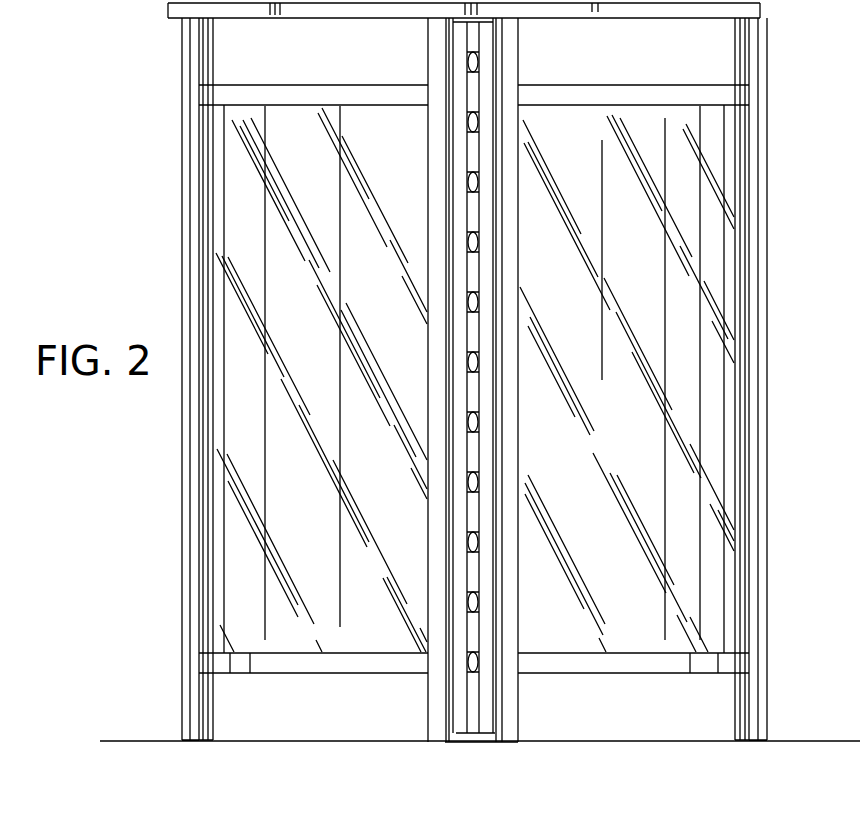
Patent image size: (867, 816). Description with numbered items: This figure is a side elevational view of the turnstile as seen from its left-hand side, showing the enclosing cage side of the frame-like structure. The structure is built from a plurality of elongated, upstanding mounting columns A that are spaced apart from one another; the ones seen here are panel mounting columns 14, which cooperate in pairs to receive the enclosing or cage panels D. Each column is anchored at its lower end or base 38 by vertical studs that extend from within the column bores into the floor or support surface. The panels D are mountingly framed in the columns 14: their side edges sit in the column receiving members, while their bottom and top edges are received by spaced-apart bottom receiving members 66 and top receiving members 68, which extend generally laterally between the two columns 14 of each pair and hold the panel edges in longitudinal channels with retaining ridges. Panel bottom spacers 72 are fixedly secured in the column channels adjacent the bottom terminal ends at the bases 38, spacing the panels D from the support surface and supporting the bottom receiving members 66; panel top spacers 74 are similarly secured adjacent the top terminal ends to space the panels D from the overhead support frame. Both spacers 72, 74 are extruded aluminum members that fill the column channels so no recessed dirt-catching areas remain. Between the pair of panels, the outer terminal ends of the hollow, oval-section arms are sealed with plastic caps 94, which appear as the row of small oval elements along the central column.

The panel mounting column 14 is at (196, 480).
The mounting column base 38 is at (196, 700).
The bottom receiving member 66 is at (278, 663).
The top receiving member 68 is at (364, 95).
The panel bottom spacer 72 is at (207, 705).
The panel top spacer 74 is at (199, 50).
The plastic cap 94 is at (476, 362).
The enclosing panel D is at (210, 219).
The mounting column A is at (165, 656).